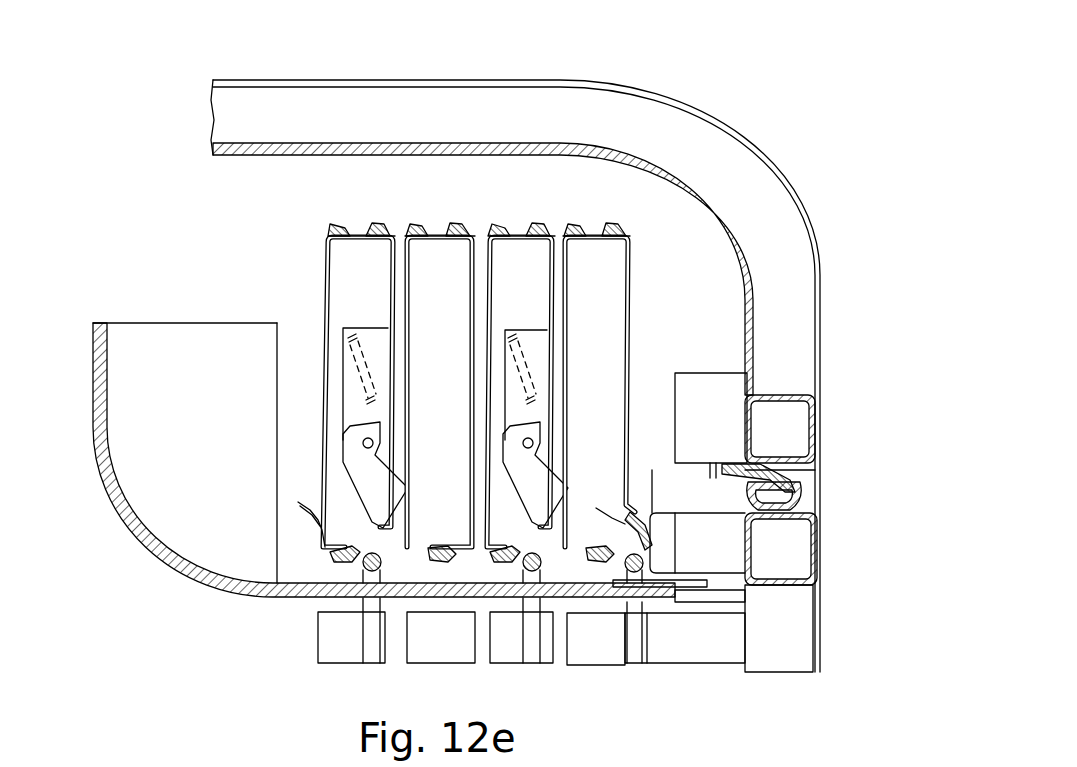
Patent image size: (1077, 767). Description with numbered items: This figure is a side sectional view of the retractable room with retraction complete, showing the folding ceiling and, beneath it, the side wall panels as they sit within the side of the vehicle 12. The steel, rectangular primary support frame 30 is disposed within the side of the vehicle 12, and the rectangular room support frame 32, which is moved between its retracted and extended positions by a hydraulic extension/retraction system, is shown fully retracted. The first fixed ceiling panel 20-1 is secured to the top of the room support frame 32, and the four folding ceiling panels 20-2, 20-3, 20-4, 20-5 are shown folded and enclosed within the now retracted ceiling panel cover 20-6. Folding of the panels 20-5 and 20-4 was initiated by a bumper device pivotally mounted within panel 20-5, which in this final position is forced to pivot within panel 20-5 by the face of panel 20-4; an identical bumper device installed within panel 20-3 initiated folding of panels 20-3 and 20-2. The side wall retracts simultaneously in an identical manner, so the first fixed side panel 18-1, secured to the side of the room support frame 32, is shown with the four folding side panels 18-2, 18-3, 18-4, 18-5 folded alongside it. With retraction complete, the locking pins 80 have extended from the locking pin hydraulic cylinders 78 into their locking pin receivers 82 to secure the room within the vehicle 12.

The vehicle 12 is at (447, 86).
The first fixed ceiling panel 20-1 is at (652, 470).
The folding ceiling panel 20-2 is at (628, 298).
The folding ceiling panel 20-3 is at (520, 268).
The folding ceiling panel 20-4 is at (438, 275).
The folding ceiling panel 20-5 is at (328, 272).
The ceiling panel cover 20-6 is at (130, 522).
The first fixed side panel 18-1 is at (692, 645).
The folding side panel 18-2 is at (595, 640).
The folding side panel 18-3 is at (510, 648).
The folding side panel 18-4 is at (437, 645).
The folding side panel 18-5 is at (325, 645).
The primary support frame 30 is at (783, 395).
The room support frame 32 is at (790, 583).
The locking pin hydraulic cylinder 78 is at (720, 420).
The locking pin 80 is at (700, 493).
The locking pin receiver 82 is at (697, 543).